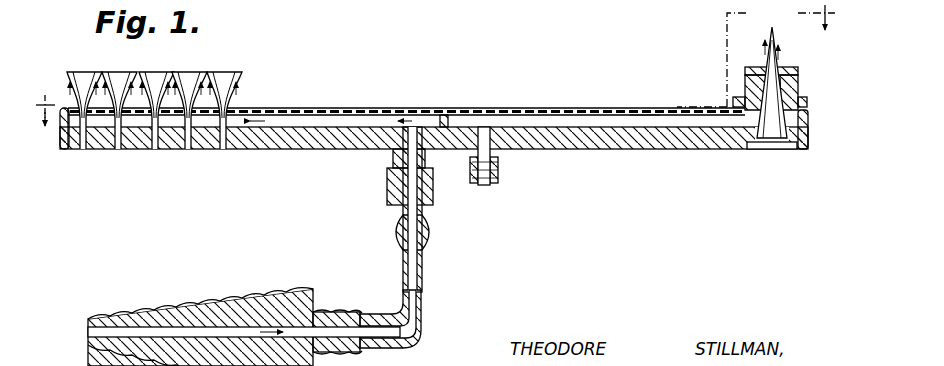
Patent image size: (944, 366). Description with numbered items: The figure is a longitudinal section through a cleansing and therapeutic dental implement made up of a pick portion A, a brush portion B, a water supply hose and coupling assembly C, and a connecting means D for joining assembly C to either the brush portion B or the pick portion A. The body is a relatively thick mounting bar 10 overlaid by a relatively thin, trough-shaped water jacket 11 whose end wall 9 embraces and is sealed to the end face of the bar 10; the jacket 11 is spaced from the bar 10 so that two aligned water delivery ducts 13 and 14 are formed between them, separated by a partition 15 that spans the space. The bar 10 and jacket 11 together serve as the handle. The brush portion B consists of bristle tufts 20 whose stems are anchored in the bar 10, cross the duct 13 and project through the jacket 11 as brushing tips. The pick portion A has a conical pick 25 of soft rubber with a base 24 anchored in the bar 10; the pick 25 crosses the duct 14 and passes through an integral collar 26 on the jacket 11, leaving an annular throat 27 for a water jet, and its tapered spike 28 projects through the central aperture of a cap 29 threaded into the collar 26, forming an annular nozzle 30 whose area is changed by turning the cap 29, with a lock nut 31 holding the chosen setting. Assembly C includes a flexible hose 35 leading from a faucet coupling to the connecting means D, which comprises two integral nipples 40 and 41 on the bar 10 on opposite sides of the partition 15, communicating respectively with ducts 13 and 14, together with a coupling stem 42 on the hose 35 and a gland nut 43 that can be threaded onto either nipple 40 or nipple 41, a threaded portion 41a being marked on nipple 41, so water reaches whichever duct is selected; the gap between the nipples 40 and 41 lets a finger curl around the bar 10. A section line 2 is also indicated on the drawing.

The section line 2- 2 is at (45, 97).
The end wall 9 is at (62, 122).
The mounting bar 10 is at (636, 149).
The water jacket 11 is at (603, 108).
The water delivery duct 13 is at (330, 112).
The water delivery duct 14 is at (637, 113).
The partition 15 is at (445, 110).
The bristle tufts 20 is at (190, 68).
The base 24 is at (758, 149).
The pick 25 is at (726, 57).
The collar 26 is at (800, 87).
The annular throat 27 is at (745, 91).
The tapered spike 28 is at (777, 68).
The cap 29 is at (800, 71).
The annular nozzle 30 is at (768, 66).
The lock nut 31 is at (808, 103).
The flexible hose 35 is at (423, 302).
The nipple 40 is at (396, 160).
The nipple 41 is at (498, 172).
The pin thread 41a is at (487, 185).
The coupling stem 42 is at (403, 232).
The gland nut 43 is at (387, 190).
The pick portion A is at (772, 152).
The brush portion B is at (170, 160).
The water supply hose and coupling assembly C is at (216, 291).
The connecting means D is at (458, 182).